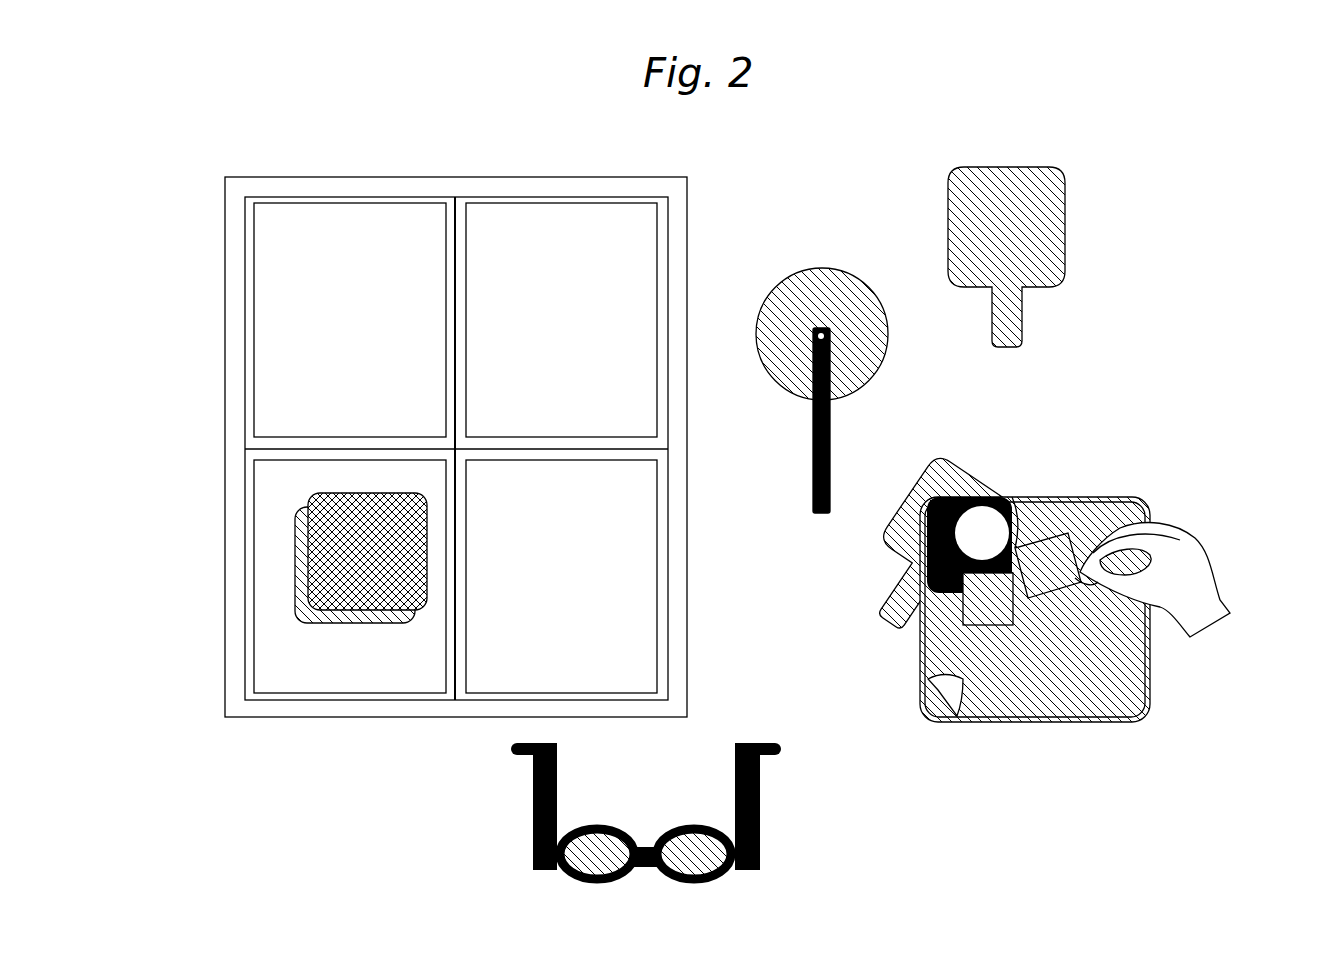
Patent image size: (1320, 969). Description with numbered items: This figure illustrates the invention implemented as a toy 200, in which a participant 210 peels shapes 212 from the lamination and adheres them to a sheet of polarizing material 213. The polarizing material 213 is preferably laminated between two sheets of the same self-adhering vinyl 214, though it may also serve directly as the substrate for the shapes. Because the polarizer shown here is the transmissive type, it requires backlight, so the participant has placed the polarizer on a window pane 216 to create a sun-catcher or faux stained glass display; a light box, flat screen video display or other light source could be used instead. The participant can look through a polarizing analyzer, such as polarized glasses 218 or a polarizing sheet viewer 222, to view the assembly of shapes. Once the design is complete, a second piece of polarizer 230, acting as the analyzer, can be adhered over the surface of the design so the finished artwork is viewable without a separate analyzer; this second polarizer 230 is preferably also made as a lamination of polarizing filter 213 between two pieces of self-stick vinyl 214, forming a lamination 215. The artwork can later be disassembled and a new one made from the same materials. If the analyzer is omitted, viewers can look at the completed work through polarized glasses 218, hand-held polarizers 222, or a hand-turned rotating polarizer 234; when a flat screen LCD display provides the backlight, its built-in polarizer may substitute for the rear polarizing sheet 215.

The toy 200 is at (1157, 498).
The participant 210 is at (1202, 575).
The shapes 212 is at (340, 553).
The sheet of polarizing material 213 is at (297, 508).
The self-adhering vinyl 214 is at (947, 687).
The lamination 215 is at (1040, 725).
The window pane 216 is at (260, 528).
The polarized glasses 218 is at (527, 872).
The polarizing sheet viewer 222 is at (1012, 163).
The second piece of polarizer 230 is at (433, 560).
The rotating polarizer 234 is at (822, 268).